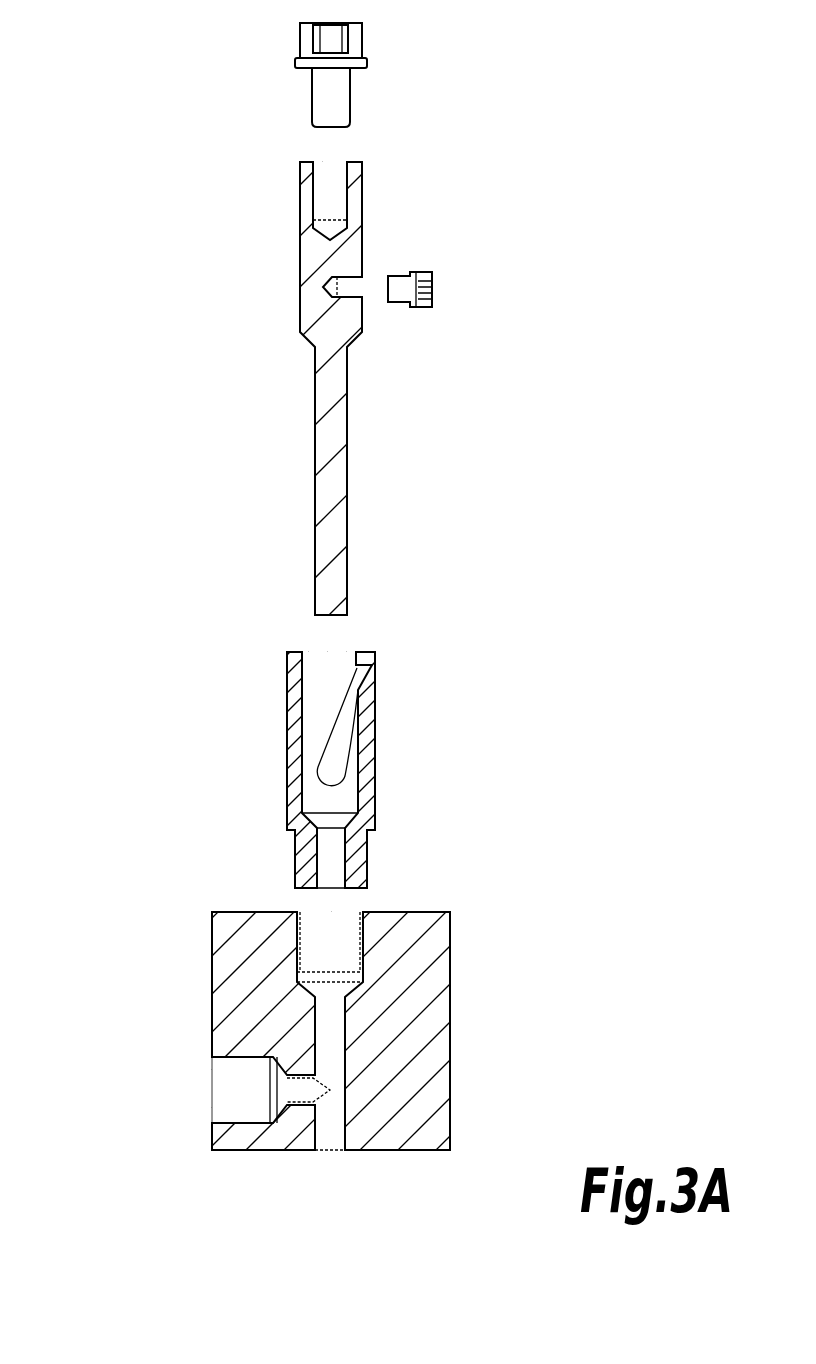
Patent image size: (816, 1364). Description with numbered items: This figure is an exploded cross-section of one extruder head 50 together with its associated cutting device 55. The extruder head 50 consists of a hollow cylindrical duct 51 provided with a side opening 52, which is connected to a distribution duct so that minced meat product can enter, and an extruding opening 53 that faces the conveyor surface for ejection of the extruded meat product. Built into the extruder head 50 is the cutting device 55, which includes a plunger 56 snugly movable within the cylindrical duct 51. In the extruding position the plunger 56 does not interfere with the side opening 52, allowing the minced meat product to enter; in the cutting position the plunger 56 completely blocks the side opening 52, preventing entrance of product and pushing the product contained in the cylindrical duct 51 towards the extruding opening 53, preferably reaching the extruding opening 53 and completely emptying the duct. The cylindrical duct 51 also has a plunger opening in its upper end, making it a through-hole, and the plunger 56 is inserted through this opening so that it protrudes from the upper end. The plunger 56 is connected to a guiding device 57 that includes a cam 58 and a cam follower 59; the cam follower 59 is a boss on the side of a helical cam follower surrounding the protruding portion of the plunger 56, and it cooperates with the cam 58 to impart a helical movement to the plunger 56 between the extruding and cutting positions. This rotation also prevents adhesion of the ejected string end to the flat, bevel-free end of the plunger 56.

The extruder head 50 is at (107, 907).
The cylindrical duct 51 is at (328, 1017).
The side opening 52 is at (313, 1090).
The extruding opening 53 is at (330, 1150).
The cutting device 55 is at (107, 22).
The plunger 56 is at (323, 463).
The guiding device 57 is at (495, 328).
The cam 58 is at (365, 680).
The cam follower 59 is at (418, 307).